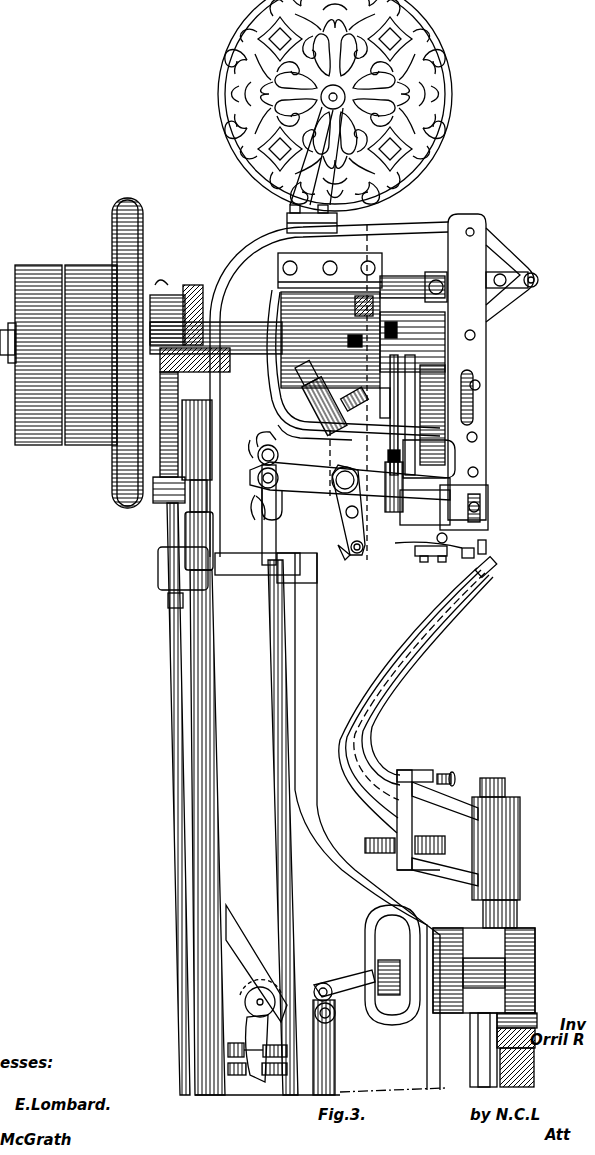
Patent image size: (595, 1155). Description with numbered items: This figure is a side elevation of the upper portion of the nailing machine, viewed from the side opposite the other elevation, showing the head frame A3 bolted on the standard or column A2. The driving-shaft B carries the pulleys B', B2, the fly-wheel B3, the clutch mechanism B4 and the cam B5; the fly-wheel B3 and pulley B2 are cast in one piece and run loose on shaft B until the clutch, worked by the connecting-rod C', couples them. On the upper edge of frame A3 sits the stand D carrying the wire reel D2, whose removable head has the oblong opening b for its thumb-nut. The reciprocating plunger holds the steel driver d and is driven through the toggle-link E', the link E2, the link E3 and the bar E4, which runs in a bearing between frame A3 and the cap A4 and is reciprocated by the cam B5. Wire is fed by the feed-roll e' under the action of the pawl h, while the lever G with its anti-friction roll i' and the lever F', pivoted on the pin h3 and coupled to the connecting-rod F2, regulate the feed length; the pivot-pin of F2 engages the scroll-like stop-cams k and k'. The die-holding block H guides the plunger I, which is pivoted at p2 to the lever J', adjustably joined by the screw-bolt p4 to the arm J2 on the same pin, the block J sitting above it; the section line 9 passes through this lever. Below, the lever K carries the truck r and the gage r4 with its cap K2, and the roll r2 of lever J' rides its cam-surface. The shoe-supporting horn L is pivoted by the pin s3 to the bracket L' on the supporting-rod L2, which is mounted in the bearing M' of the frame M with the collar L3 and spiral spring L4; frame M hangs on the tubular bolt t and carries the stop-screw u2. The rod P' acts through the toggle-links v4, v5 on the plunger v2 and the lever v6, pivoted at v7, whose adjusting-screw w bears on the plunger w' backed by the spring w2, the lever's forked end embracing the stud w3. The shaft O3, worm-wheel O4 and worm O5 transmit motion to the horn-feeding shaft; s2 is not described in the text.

The wire-carrying reel D2 is at (342, 105).
The driving-shaft B is at (355, 198).
The stand D is at (300, 185).
The frame A3 is at (448, 330).
The link E2 is at (495, 256).
The link E3 is at (513, 274).
The toggle-link E' is at (513, 291).
The bar E4 is at (392, 280).
The cap A4 is at (330, 267).
The section line 9 is at (353, 401).
The pulley B' is at (31, 355).
The pulley B2 is at (91, 355).
The fly-wheel B3 is at (138, 353).
The clutch mechanism B4 is at (167, 312).
The worm O5 is at (195, 306).
The worm-wheel O4 is at (218, 370).
The cam B5 is at (363, 340).
The driver d is at (351, 341).
The oblong opening b is at (360, 300).
The anti-friction roll i' is at (391, 322).
The lever G is at (417, 415).
The feed-roll e' is at (485, 397).
The arm J2 is at (319, 397).
The screw-bolt p4 is at (355, 397).
The lever F' is at (350, 443).
The lever J' is at (315, 448).
The stop-cam k is at (261, 446).
The stop-cam k' is at (264, 509).
The connecting-rod F2 is at (270, 632).
The pin h3 is at (345, 475).
The pawl h is at (388, 481).
The plunger I is at (427, 482).
The die-holding block H is at (464, 507).
The stop-screw u2 is at (472, 497).
The block J is at (331, 510).
The pivot p2 is at (344, 514).
The anti-friction roll r2 is at (357, 556).
The roll or truck r is at (419, 557).
The gage r4 is at (473, 557).
The lever K is at (428, 549).
The cap K2 is at (431, 563).
The connecting-rod C' is at (171, 799).
The standard or column A2 is at (230, 778).
The shaft O3 is at (205, 640).
The shoe-supporting horn L is at (418, 695).
The bracket L' is at (452, 709).
The screw s2 is at (454, 776).
The pivot-pin s3 is at (397, 847).
The supporting-rod L2 is at (495, 780).
The bearing M' is at (500, 1007).
The bar or frame M is at (507, 1039).
The collar L3 is at (520, 1025).
The spiral spring L4 is at (523, 1060).
The plunger v2 is at (372, 970).
The tubular bolt t is at (389, 977).
The toggle-link v4 is at (344, 983).
The toggle-link v5 is at (282, 975).
The pivot v7 is at (257, 1001).
The lever v6 is at (256, 1048).
The adjusting-screw w is at (244, 1041).
The plunger w' is at (275, 1041).
The spiral spring w2 is at (240, 1079).
The stud w3 is at (275, 1079).
The rod P' is at (337, 1039).